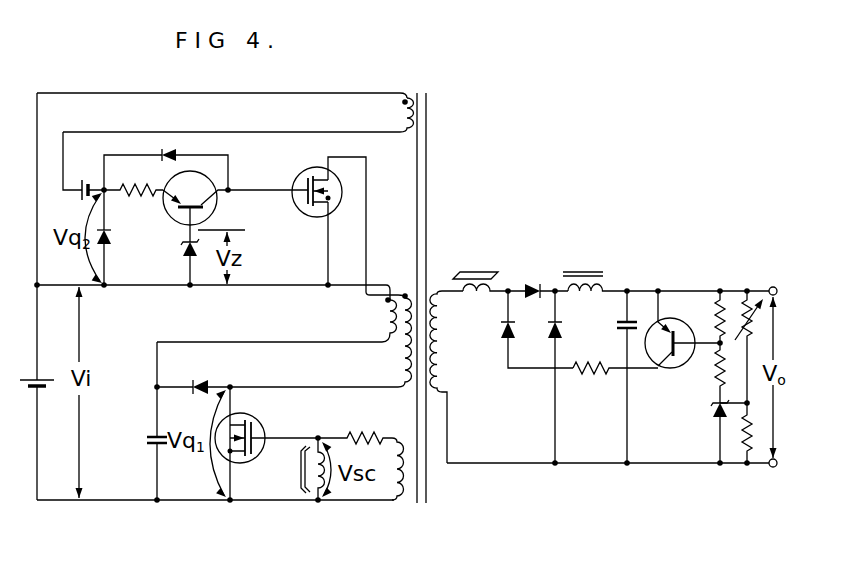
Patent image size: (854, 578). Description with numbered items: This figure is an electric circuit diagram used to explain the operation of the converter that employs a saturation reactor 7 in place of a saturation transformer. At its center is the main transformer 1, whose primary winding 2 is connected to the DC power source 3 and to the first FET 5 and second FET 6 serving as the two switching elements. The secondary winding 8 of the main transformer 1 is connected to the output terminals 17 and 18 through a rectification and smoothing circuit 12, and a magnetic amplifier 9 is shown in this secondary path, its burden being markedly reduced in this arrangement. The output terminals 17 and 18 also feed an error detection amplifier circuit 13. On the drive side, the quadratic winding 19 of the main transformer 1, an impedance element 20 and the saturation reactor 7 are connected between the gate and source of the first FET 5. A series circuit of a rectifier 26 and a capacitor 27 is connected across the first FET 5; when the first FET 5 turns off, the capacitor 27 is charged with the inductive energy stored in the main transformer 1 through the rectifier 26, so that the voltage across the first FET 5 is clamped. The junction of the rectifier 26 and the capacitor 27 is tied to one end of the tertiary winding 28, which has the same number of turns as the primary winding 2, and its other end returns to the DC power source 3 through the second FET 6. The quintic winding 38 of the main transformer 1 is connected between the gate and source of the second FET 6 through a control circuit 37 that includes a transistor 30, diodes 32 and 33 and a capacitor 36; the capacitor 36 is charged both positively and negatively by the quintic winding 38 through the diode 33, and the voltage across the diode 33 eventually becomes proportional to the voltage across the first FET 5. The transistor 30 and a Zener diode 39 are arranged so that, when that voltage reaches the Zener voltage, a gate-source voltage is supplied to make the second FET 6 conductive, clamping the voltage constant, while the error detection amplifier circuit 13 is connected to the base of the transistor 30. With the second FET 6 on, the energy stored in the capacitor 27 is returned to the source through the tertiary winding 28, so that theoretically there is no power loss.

The main transformer 1 is at (446, 153).
The primary winding 2 is at (403, 292).
The DC power source 3 is at (47, 389).
The first FET 5 is at (252, 456).
The second FET 6 is at (339, 196).
The saturation reactor 7 is at (318, 503).
The secondary winding 8 is at (445, 338).
The magnetic amplifier 9 is at (500, 286).
The rectification and smoothing circuit 12 is at (598, 253).
The error detection amplifier circuit 13 is at (675, 482).
The output terminal 17 is at (768, 287).
The output terminal 18 is at (771, 470).
The quadratic winding 19 is at (390, 486).
The impedance element 20 is at (351, 432).
The rectifier 26 is at (203, 381).
The capacitor 27 is at (146, 441).
The tertiary winding 28 is at (378, 322).
The transistor 30 is at (207, 182).
The diode 32 is at (170, 150).
The diode 33 is at (111, 240).
The capacitor 36 is at (84, 180).
The control circuit 37 is at (98, 104).
The quintic winding 38 is at (398, 95).
The Zener diode 39 is at (183, 250).